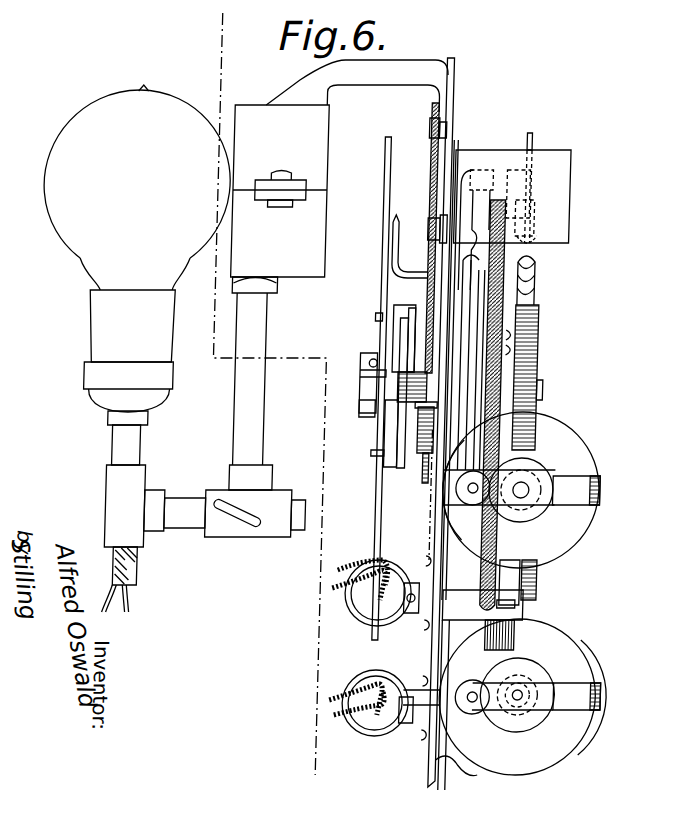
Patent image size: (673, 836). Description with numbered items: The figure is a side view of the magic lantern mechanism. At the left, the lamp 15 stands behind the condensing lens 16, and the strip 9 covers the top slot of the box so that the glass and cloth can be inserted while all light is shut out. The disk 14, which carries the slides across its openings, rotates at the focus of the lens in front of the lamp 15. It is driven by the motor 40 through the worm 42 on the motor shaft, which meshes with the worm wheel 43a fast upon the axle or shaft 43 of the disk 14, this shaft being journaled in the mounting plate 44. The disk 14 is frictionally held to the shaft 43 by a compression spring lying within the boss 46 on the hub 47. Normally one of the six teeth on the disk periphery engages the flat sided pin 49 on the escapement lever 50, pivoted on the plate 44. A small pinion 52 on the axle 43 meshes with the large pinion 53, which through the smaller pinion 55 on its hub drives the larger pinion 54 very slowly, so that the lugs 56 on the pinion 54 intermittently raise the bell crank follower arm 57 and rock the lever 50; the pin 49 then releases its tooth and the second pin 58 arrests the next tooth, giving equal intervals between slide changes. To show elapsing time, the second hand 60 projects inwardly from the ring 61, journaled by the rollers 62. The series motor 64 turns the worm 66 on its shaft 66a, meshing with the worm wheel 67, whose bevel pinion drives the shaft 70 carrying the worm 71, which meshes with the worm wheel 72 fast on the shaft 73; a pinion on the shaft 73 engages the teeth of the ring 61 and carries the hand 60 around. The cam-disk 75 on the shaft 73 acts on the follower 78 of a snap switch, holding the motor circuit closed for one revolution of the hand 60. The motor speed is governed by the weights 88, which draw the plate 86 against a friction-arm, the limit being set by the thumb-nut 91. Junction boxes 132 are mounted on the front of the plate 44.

The strip 9 is at (212, 50).
The disk 14 is at (381, 192).
The lamp 15 is at (83, 114).
The condensing lens 16 is at (280, 191).
The motor 40 is at (572, 440).
The worm 42 is at (550, 478).
The axle or shaft 43 is at (363, 382).
The worm wheel 43a is at (538, 413).
The mounting plate 44 is at (449, 103).
The boss 46 is at (371, 363).
The hub 47 is at (372, 405).
The flat sided pin 49 is at (376, 317).
The escapement lever 50 is at (394, 310).
The small pinion 52 is at (430, 386).
The large pinion 53 is at (420, 455).
The larger pinion 54 is at (431, 484).
The smaller pinion 55 is at (423, 472).
The lugs 56 is at (404, 349).
The bell crank follower arm 57 is at (410, 312).
The second pin 58 is at (373, 460).
The second hand 60 is at (397, 232).
The ring 61 is at (427, 113).
The rollers 62 is at (427, 136).
The series motor 64 is at (588, 653).
The worm 66 is at (535, 705).
The motor shaft 66a is at (530, 706).
The worm wheel 67 is at (545, 575).
The shaft 70 is at (478, 318).
The worm 71 is at (506, 185).
The worm wheel 72 is at (482, 172).
The shaft 73 is at (530, 203).
The cam-disk 75 is at (529, 165).
The follower 78 is at (528, 232).
The plate 86 is at (508, 733).
The weights 88 is at (483, 705).
The thumb-nut 91 is at (483, 690).
The junction boxes 132 is at (375, 672).